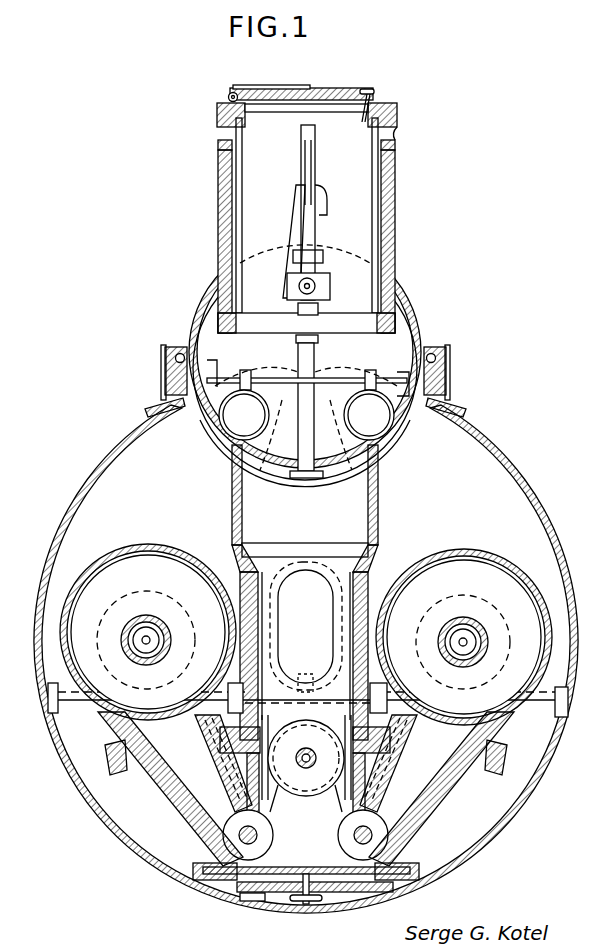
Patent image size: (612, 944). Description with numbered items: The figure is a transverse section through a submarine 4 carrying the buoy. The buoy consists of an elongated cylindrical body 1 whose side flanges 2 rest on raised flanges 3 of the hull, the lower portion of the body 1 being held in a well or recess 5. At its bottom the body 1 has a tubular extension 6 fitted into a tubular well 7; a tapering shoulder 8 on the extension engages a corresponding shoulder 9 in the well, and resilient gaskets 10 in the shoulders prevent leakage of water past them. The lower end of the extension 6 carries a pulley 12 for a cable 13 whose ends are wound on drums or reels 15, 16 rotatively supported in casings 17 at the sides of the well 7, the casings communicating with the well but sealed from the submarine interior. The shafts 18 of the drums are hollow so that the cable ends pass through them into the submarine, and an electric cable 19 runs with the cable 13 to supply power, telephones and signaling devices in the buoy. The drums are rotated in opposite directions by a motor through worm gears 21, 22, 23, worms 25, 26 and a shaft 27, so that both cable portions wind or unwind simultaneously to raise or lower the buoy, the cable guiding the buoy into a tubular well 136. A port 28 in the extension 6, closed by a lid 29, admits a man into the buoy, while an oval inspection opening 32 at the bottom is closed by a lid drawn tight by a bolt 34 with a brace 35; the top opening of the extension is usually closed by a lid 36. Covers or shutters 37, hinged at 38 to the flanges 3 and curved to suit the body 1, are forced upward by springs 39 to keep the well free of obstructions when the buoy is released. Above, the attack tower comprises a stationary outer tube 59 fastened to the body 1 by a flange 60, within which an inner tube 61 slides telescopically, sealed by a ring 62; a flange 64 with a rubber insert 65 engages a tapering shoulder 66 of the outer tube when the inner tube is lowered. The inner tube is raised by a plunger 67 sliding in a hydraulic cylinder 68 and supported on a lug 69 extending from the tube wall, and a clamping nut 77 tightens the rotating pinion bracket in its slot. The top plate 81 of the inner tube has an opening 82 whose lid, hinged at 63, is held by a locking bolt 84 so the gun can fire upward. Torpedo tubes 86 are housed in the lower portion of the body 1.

The elongated cylindrical body 1 is at (412, 330).
The flanges 2 is at (434, 356).
The raised flanges 3 is at (449, 366).
The submarine 4 is at (500, 460).
The well or recess 5 is at (412, 440).
The tubular extension 6 is at (377, 524).
The tubular well 7 is at (375, 560).
The tapering shoulder 8 is at (305, 556).
The shoulder 9 is at (240, 556).
The resilient gaskets 10 is at (245, 549).
The pulley 12 is at (305, 797).
The cable 13 is at (177, 787).
The drum or reel 15 is at (141, 560).
The drum or reel 16 is at (474, 570).
The casings 17 is at (92, 572).
The shafts 18 is at (163, 628).
The electric cable 19 is at (272, 847).
The worm gear 21 is at (311, 672).
The worm gear 22 is at (186, 636).
The worm gear 23 is at (502, 636).
The worm 25 is at (172, 692).
The worm 26 is at (486, 692).
The shaft 27 is at (545, 706).
The port 28 is at (328, 610).
The lid 29 is at (339, 562).
The oval inspection opening 32 is at (338, 880).
The bolt 34 is at (305, 904).
The brace 35 is at (270, 890).
The lid 36 is at (304, 479).
The covers or shutters 37 is at (215, 446).
The hinges 38 is at (176, 352).
The springs 39 is at (162, 386).
The stationary outer tube 59 is at (395, 236).
The flange 60 is at (384, 288).
The inner tube 61 is at (373, 222).
The ring 62 is at (381, 306).
The hinge 63 is at (231, 94).
The flange 64 is at (398, 118).
The rubber insert 65 is at (398, 133).
The tapering shoulder 66 is at (395, 143).
The plunger 67 is at (316, 333).
The hydraulic cylinder 68 is at (316, 365).
The lug 69 is at (319, 310).
The clamping nut 77 is at (313, 137).
The top plate 81 is at (333, 95).
The opening 82 is at (272, 100).
The locking bolt 84 is at (368, 90).
The torpedo tubes 86 is at (262, 410).
The tubular well 136 is at (243, 707).